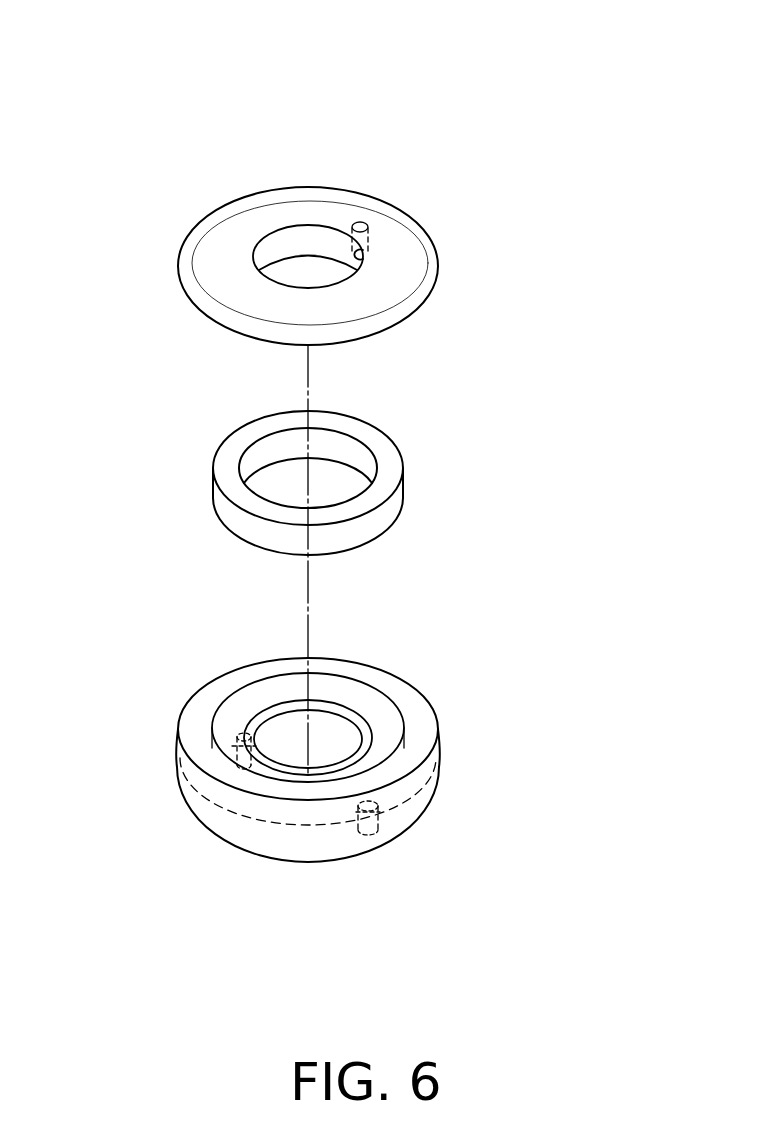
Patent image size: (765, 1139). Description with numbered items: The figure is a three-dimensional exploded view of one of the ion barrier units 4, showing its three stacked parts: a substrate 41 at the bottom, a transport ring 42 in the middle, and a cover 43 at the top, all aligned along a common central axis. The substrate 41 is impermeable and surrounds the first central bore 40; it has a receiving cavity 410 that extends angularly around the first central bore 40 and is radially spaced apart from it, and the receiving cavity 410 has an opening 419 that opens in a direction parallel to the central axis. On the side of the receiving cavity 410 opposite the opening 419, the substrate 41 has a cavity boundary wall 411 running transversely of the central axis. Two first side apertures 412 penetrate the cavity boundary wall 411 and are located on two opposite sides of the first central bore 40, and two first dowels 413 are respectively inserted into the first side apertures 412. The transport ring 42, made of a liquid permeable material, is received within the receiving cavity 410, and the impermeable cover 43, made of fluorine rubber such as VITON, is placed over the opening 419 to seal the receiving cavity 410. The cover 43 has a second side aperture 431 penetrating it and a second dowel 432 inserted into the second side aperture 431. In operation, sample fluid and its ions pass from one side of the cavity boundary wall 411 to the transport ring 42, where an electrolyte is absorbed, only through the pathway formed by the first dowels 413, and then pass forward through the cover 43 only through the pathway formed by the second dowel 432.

The ion barrier unit 4 is at (212, 111).
The cover 43 is at (178, 196).
The second dowel 432 is at (362, 222).
The second side aperture 431 is at (367, 255).
The transport ring 42 is at (232, 442).
The substrate 41 is at (158, 705).
The first central bore 40 is at (272, 730).
The opening 419 is at (363, 697).
The receiving cavity 410 is at (380, 713).
The cavity boundary wall 411 is at (392, 738).
The first side aperture 412 is at (243, 768).
The first dowel 413 is at (237, 753).